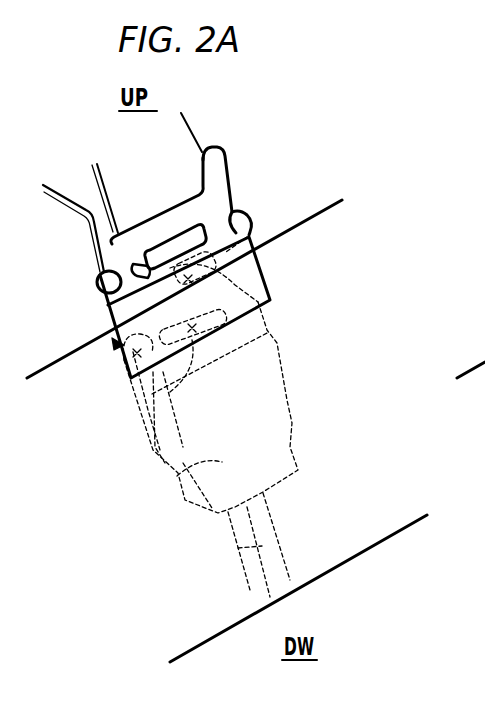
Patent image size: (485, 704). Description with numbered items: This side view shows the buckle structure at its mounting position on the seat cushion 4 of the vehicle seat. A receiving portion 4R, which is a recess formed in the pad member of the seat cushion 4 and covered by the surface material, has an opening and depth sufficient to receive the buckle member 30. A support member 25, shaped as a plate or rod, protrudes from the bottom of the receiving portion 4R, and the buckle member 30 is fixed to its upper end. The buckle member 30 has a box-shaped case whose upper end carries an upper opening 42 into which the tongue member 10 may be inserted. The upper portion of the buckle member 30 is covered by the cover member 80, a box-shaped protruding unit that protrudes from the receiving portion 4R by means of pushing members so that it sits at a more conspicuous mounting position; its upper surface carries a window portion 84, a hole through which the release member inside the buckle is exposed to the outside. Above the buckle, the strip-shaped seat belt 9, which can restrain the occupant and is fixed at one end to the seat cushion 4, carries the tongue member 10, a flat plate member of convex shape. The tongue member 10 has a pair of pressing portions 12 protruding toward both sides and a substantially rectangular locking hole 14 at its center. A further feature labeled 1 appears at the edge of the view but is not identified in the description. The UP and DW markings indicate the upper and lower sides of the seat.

The vehicle body 1 is at (471, 346).
The seat cushion 4 is at (359, 253).
The receiving portion 4R is at (133, 376).
The seat belt 9 is at (117, 185).
The tongue member 10 is at (214, 153).
The pressing portions 12 is at (240, 214).
The locking hole 14 is at (247, 237).
The support member 25 is at (238, 548).
The buckle member 30 is at (177, 476).
The upper opening 42 is at (153, 418).
The cover member 80 is at (248, 273).
The window portion 84 is at (116, 306).